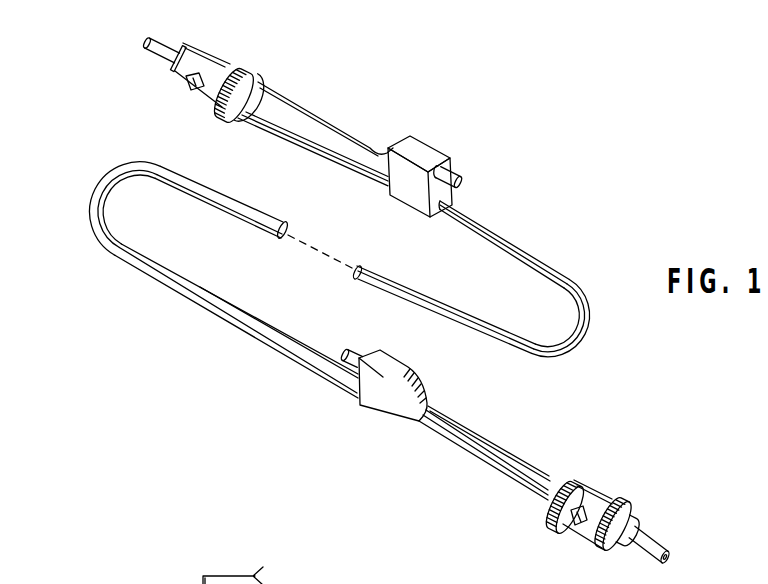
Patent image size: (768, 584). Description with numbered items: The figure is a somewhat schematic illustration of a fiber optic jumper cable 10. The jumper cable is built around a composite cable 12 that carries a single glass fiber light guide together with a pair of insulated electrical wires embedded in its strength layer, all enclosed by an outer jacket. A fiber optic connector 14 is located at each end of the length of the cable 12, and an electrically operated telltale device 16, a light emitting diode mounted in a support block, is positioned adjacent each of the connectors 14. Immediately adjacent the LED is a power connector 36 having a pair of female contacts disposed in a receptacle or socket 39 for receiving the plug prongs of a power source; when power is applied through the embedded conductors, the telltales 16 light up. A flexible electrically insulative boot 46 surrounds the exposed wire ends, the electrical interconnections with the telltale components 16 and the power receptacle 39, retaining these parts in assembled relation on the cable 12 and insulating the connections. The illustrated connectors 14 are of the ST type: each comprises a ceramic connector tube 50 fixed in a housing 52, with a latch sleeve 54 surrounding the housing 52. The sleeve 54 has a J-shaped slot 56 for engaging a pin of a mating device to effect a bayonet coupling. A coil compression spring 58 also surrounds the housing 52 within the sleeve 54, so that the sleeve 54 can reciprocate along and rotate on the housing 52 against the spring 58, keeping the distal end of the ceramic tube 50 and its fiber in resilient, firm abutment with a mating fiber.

The fiber optic jumper cable 10 is at (380, 120).
The composite cable 12 is at (535, 250).
The fiber optic connector 14 is at (180, 39).
The electrically operated telltale device 16 is at (460, 167).
The power connector 36 is at (270, 574).
The receptacle or socket 39 is at (440, 182).
The flexible electrically insulative boot 46 is at (425, 402).
The ceramic connector tube 50 is at (150, 50).
The housing 52 is at (177, 62).
The latch sleeve 54 is at (214, 106).
The J-shaped slot 56 is at (572, 520).
The coil compression spring 58 is at (543, 498).